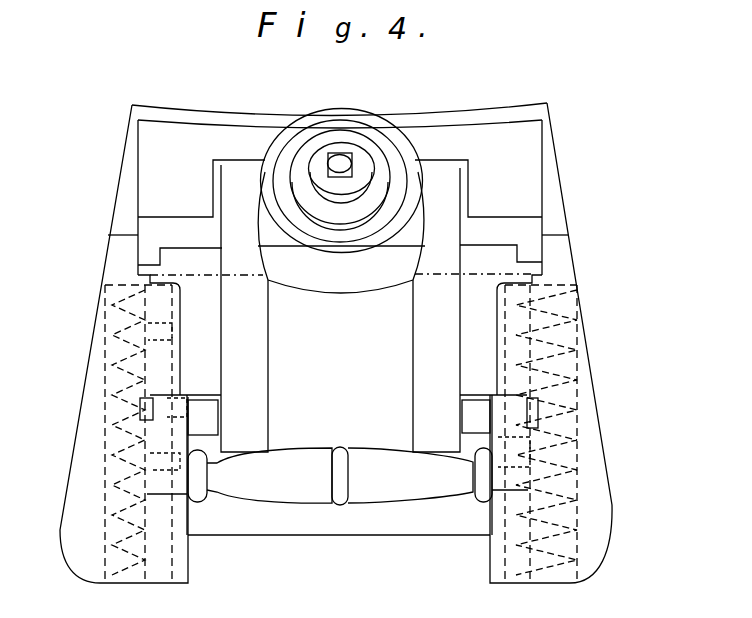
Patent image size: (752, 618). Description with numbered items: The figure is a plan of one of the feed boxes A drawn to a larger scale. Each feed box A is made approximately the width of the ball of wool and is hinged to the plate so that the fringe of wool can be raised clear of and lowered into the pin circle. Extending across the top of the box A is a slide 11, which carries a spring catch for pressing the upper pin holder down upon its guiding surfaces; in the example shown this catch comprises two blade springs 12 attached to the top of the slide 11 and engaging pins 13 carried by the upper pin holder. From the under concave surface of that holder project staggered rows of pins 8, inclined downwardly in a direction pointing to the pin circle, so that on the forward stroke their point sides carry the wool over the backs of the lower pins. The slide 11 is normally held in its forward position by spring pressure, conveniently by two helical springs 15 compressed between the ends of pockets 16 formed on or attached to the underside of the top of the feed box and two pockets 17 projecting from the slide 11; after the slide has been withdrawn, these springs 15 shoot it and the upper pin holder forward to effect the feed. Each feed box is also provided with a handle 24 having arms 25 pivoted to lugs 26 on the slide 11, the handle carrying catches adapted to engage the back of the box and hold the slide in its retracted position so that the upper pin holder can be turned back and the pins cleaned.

The feed box A is at (103, 338).
The pins 8 is at (407, 152).
The pins 13 is at (213, 178).
The helical springs 15 is at (463, 178).
The blade springs 12 is at (257, 335).
The slide 11 is at (341, 292).
The arms 25 is at (173, 410).
The lugs 26 is at (198, 416).
The pockets 17 is at (577, 360).
The pockets 16 is at (577, 500).
The handle 24 is at (340, 476).